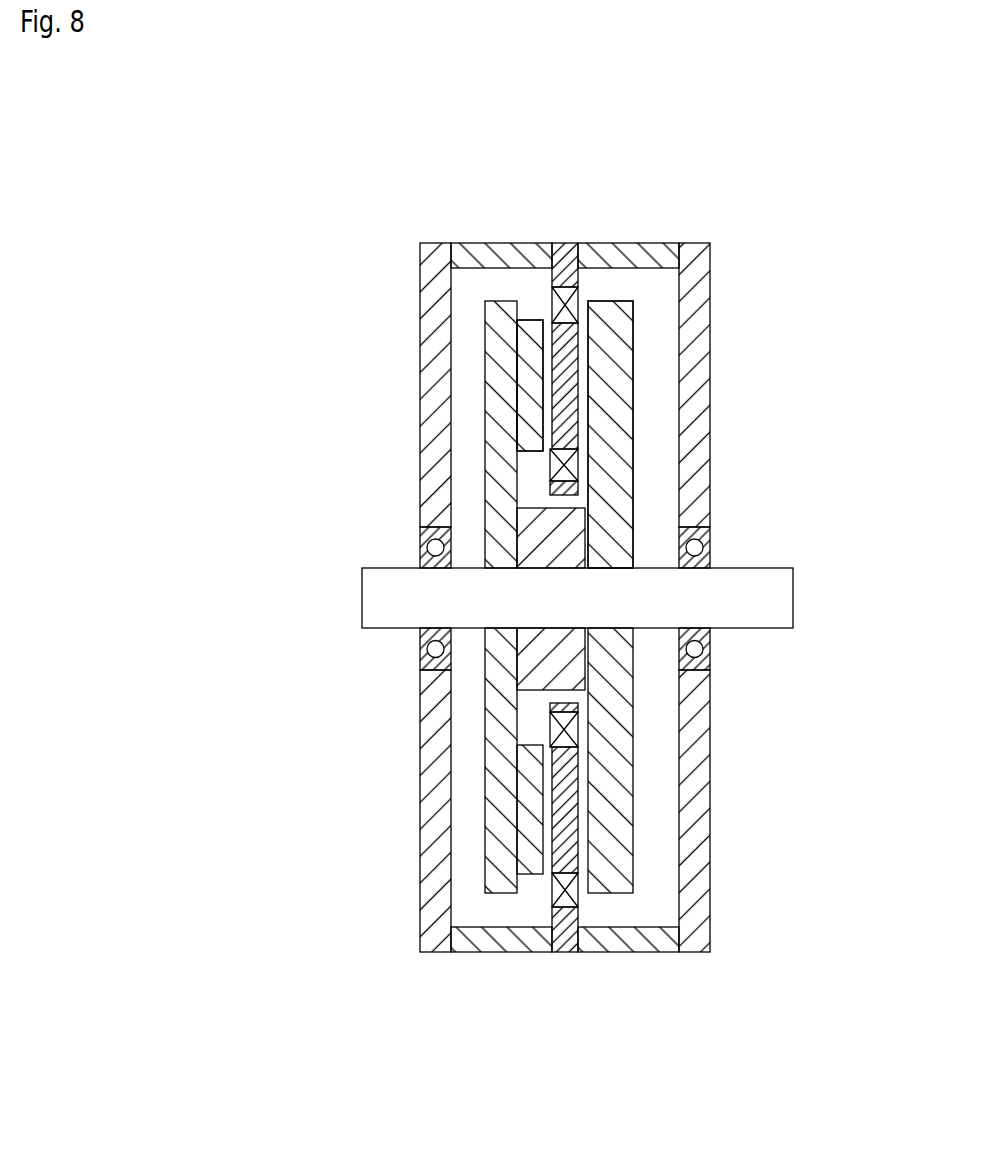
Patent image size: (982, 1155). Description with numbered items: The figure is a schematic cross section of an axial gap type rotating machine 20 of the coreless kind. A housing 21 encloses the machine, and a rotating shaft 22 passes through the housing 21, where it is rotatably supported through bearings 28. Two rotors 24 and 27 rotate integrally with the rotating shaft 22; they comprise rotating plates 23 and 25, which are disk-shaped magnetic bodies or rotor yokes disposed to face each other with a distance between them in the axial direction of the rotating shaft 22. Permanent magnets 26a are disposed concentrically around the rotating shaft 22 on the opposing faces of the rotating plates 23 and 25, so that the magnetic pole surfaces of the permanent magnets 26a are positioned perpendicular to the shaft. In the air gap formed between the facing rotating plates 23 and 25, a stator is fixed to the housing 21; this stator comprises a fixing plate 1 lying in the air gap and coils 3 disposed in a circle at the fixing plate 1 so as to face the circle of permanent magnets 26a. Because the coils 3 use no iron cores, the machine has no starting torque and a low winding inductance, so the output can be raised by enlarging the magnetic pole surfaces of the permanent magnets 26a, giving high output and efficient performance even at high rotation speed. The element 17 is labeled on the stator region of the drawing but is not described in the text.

The axial gap type rotating machine 20 is at (742, 200).
The housing 21 is at (697, 403).
The rotating shaft 22 is at (795, 594).
The rotating plate 23 is at (620, 360).
The rotor 24 is at (613, 295).
The rotating plate 25 is at (497, 322).
The permanent magnets 26a is at (525, 355).
The rotor 27 is at (535, 295).
The bearings 28 is at (698, 536).
The fixing plate 1 is at (563, 938).
The coils 3 is at (572, 463).
The shaft portion 17 is at (567, 843).